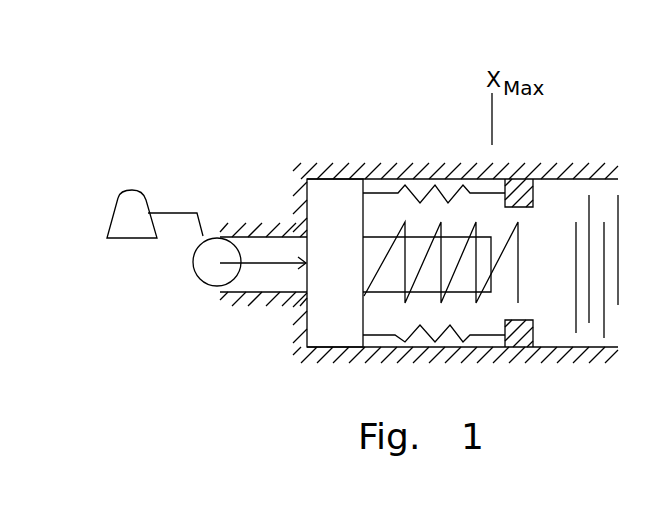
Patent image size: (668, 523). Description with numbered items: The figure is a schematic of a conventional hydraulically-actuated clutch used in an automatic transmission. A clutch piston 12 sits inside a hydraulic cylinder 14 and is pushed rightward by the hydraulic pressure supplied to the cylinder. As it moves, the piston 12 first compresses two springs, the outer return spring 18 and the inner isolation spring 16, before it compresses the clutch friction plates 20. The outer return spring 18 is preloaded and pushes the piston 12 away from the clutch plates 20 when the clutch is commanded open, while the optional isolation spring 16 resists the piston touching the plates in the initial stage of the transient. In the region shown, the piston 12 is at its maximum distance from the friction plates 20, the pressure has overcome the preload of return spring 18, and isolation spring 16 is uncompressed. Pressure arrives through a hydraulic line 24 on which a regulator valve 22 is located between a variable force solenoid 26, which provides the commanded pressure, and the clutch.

The clutch piston 12 is at (332, 330).
The hydraulic cylinder 14 is at (395, 321).
The isolation spring 16 is at (520, 258).
The outer return spring 18 is at (388, 193).
The clutch friction plates 20 is at (613, 305).
The regulator valve 22 is at (212, 237).
The hydraulic line 24 is at (277, 298).
The variable force solenoid 26 is at (127, 211).